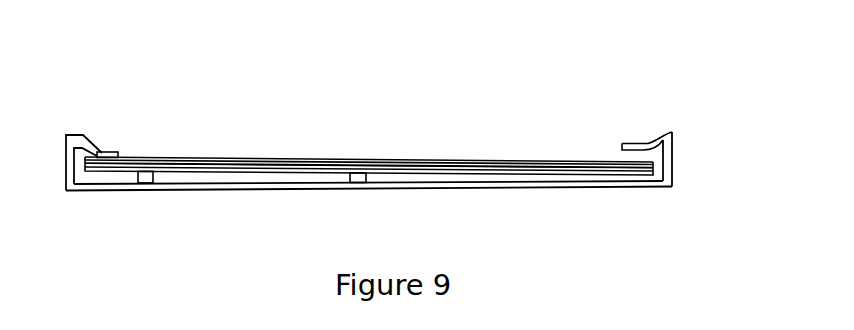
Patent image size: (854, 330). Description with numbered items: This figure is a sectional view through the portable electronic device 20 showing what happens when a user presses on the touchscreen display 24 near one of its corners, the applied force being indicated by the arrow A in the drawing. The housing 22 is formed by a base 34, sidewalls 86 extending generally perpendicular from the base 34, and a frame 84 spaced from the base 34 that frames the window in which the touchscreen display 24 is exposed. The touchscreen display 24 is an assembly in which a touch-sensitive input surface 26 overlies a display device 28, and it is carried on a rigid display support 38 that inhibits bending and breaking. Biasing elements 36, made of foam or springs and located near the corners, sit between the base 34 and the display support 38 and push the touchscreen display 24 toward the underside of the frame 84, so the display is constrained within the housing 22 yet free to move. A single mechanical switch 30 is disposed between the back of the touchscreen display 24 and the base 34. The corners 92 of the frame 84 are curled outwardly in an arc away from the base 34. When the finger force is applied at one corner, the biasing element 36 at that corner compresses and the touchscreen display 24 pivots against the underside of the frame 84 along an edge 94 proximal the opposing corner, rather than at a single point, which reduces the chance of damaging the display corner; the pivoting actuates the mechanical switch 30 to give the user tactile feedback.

The portable electronic device 20 is at (622, 76).
The housing 22 is at (647, 186).
The touchscreen display 24 is at (204, 148).
The touch-sensitive input surface 26 is at (427, 158).
The display device 28 is at (370, 165).
The single mechanical switch 30 is at (377, 173).
The base 34 is at (548, 184).
The biasing elements 36 is at (180, 178).
The display support 38 is at (262, 168).
The frame 84 is at (640, 143).
The sidewalls 86 is at (673, 156).
The corners 92 is at (670, 133).
The edge 94 is at (99, 151).
The viewing direction A is at (569, 150).